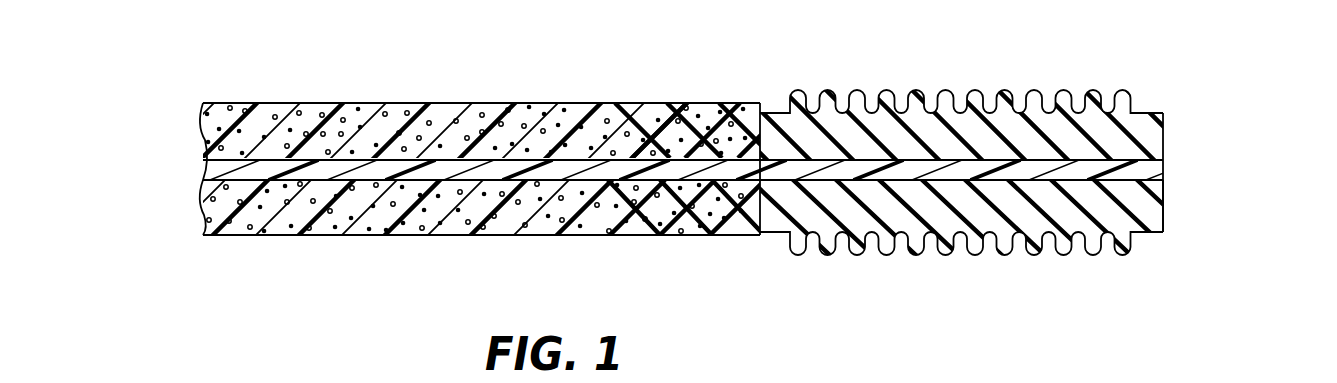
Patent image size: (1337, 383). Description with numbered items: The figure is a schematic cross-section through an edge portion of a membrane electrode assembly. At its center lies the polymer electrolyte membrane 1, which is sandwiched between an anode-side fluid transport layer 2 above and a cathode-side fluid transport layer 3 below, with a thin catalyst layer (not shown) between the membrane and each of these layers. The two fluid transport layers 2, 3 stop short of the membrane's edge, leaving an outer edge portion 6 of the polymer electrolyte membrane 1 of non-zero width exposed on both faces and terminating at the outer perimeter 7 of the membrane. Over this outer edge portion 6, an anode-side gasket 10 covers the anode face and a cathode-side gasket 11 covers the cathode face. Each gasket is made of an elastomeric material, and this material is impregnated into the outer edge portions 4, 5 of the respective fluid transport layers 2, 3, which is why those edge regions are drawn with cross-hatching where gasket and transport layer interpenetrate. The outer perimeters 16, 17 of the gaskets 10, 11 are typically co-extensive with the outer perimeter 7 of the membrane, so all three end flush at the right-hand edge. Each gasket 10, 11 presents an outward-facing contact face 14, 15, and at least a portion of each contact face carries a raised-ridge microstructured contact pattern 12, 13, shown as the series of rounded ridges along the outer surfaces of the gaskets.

The polymer electrolyte membrane 1 is at (212, 167).
The anode-side fluid transport layer 2 is at (345, 117).
The cathode-side fluid transport layer 3 is at (380, 220).
The outer edge portion of the anode-side fluid transport layer 4 is at (610, 95).
The outer edge portion of the cathode-side fluid transport layer 5 is at (610, 242).
The outer edge portion of the polymer electrolyte membrane 6 is at (1162, 243).
The outer perimeter of the PEM 7 is at (1163, 180).
The anode-side gasket 10 is at (1157, 140).
The cathode-side gasket 11 is at (1147, 198).
The raised-ridge microstructured contact pattern 12 is at (790, 82).
The raised-ridge microstructured contact pattern 13 is at (1133, 262).
The contact face 14 is at (1150, 113).
The contact face 15 is at (1150, 235).
The outer perimeter of the anode-side gasket 16 is at (1163, 122).
The outer perimeter of the cathode-side gasket 17 is at (1163, 210).